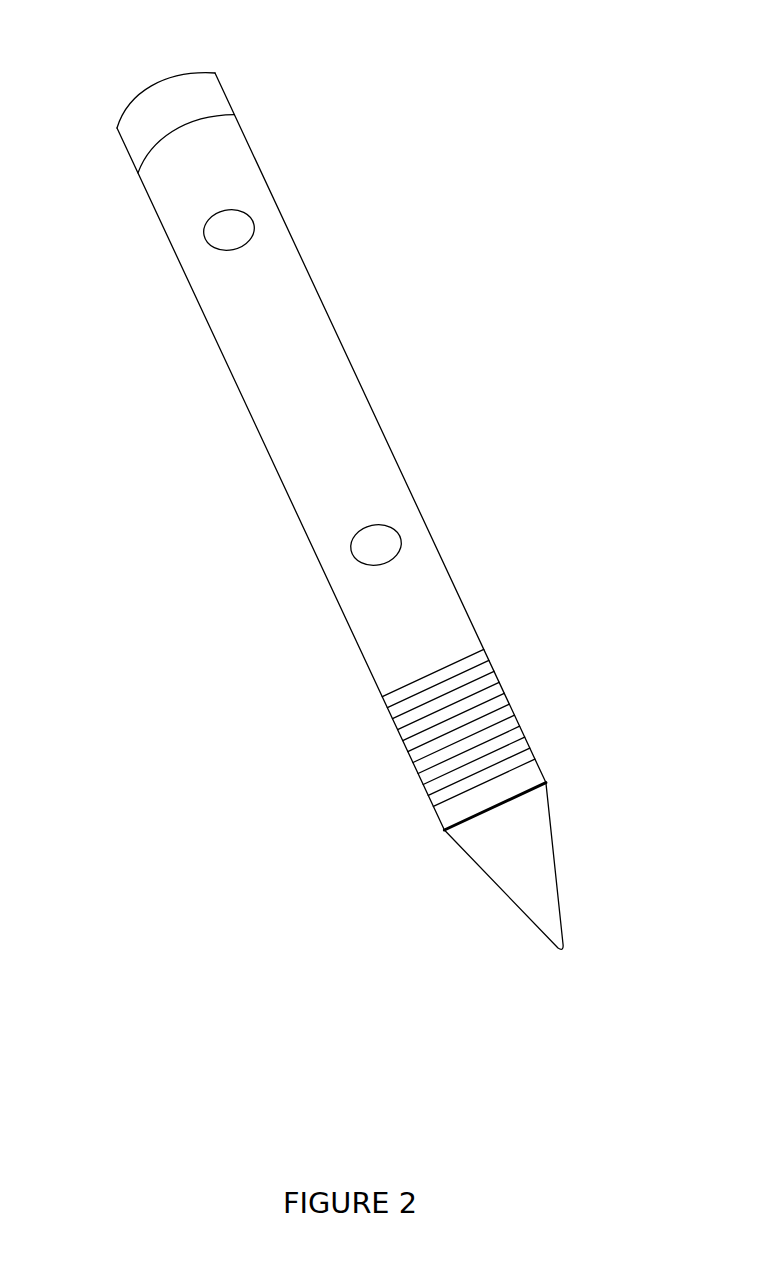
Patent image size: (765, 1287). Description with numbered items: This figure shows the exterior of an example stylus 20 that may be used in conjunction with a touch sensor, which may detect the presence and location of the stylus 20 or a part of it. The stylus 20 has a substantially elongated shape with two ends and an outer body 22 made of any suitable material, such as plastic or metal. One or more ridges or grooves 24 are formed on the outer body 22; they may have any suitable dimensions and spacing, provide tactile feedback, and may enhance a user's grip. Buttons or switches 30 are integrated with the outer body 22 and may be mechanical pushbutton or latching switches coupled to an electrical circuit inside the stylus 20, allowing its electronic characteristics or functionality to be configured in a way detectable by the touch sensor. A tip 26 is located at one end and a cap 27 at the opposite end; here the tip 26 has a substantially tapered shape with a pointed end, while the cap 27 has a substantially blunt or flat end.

The stylus 20 is at (507, 322).
The outer body 22 is at (400, 468).
The ridges or grooves 24 is at (485, 698).
The tip 26 is at (556, 860).
The cap 27 is at (224, 90).
The buttons or switches 30 is at (203, 235).